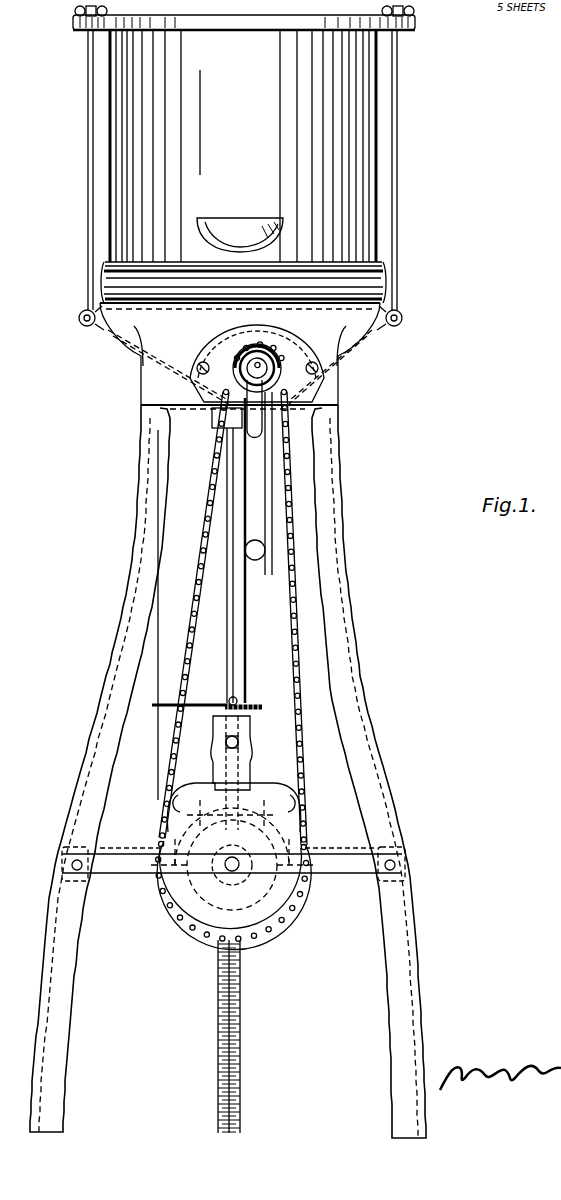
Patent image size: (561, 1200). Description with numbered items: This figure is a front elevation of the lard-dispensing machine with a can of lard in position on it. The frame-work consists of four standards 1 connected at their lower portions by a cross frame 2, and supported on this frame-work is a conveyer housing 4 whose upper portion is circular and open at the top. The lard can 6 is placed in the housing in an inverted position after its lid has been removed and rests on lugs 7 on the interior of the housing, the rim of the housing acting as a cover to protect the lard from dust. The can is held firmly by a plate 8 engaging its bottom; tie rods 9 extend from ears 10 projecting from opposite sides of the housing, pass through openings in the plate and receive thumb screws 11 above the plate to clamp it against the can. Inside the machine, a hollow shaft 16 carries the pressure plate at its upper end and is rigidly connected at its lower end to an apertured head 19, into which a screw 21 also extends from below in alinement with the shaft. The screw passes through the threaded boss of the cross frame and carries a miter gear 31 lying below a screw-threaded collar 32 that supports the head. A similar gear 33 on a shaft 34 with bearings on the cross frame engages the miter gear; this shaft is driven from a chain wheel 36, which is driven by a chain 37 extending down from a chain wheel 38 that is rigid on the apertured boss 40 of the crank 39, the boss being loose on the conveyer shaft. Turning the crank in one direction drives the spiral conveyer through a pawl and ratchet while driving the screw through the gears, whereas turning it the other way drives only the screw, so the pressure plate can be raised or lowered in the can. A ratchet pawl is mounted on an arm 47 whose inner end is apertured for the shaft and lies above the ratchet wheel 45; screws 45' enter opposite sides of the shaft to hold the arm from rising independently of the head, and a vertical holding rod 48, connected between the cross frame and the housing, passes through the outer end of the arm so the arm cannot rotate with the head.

The standards 1 is at (133, 614).
The cross frame 2 is at (120, 854).
The conveyer housing 4 is at (239, 364).
The lard can 6 is at (243, 166).
The lugs 7 is at (198, 310).
The plate 8 is at (240, 32).
The tie rods 9 is at (88, 209).
The ears 10 is at (88, 327).
The thumb screws 11 is at (76, 12).
The hollow shaft 16 is at (238, 668).
The apertured head 19 is at (252, 742).
The screw 21 is at (241, 1021).
The miter gear 31 is at (285, 830).
The screw-threaded collar 32 is at (258, 790).
The gear 33 is at (262, 900).
The shaft 34 is at (228, 868).
The chain wheel 36 is at (290, 800).
The chain 37 is at (292, 599).
The chain wheel 38 is at (262, 434).
The crank 39 is at (256, 498).
The apertured boss 40 is at (272, 382).
The ratchet wheel 45 is at (255, 720).
The screws 45' is at (328, 682).
The arm 47 is at (191, 689).
The holding rod 48 is at (158, 740).